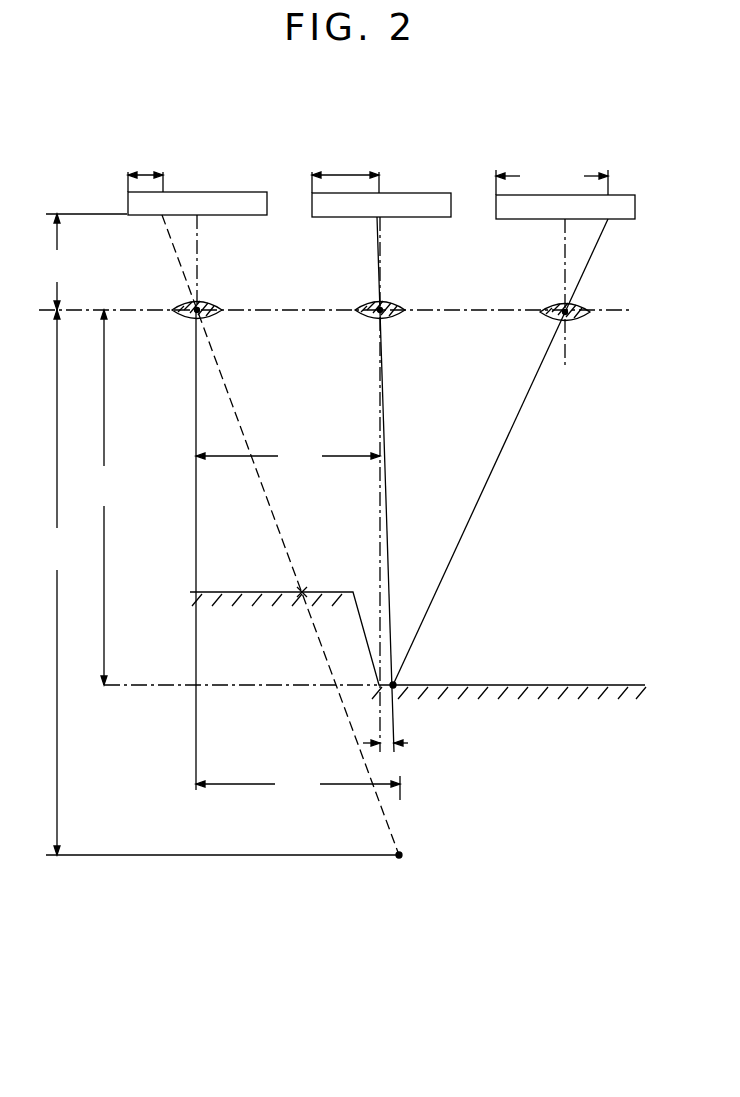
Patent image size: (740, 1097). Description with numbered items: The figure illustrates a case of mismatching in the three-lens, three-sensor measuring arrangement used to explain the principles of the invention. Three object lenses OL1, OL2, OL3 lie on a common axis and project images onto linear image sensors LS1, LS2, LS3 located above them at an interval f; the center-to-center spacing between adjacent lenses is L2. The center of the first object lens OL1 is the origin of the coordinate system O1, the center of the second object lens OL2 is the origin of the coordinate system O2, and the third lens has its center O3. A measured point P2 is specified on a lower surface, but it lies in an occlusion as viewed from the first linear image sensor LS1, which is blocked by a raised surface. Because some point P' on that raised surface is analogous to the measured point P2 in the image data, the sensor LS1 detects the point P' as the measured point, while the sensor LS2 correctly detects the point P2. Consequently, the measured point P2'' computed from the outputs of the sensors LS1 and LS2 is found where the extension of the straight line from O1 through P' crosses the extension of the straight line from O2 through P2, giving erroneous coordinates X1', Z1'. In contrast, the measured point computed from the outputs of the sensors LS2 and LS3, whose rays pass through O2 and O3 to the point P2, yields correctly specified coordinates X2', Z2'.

The linear image sensor LS1 is at (247, 204).
The linear image sensor LS2 is at (431, 204).
The linear image sensor LS3 is at (619, 204).
The object lens OL1 is at (207, 305).
The object lens OL2 is at (391, 305).
The object lens OL3 is at (580, 307).
The coordinate system origin O1 is at (194, 316).
The coordinate system origin O2 is at (378, 318).
The center of object lens O3 is at (569, 320).
The measured point P2 is at (411, 674).
The point analogous to measured point P' is at (310, 577).
The mismatched measured point P2'' is at (421, 858).
The center-to-center interval between object lenses L2 is at (288, 460).
The X coordinate of mismatched point X1' is at (298, 785).
The X coordinate of correctly specified point X2' is at (403, 742).
The Z coordinate of mismatched point Z1' is at (55, 582).
The Z coordinate of correctly specified point Z2' is at (103, 497).
The interval between object lenses and linear image sensors f is at (55, 262).